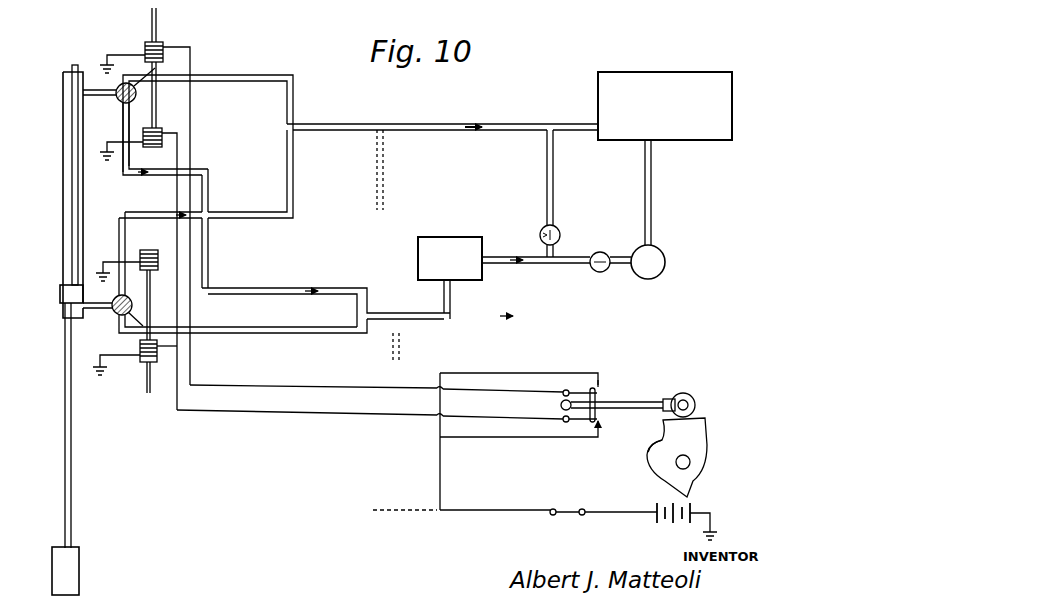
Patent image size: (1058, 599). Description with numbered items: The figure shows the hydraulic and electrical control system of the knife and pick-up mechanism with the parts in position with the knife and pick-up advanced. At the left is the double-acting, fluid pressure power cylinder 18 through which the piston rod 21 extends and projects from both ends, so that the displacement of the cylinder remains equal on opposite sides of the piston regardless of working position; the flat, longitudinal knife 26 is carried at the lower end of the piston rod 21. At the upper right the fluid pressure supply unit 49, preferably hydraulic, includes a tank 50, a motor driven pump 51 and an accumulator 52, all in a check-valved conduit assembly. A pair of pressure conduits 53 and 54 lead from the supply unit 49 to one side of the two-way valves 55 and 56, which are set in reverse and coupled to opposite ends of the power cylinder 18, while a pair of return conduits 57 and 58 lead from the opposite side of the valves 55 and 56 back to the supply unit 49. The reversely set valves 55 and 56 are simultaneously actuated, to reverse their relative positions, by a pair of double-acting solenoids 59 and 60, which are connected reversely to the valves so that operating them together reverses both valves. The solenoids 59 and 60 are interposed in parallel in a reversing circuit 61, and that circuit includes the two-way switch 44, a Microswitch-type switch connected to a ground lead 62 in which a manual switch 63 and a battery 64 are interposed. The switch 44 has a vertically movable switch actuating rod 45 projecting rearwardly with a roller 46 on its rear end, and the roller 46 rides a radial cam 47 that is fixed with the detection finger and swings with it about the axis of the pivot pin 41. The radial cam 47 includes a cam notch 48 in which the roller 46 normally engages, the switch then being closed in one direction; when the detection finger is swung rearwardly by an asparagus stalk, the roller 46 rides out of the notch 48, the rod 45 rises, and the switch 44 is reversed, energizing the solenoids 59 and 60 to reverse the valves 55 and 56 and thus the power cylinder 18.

The power cylinder 18 is at (62, 242).
The piston rod 21 is at (72, 449).
The knife 26 is at (76, 567).
The pivot pin 41 is at (691, 462).
The two-way switch 44 is at (606, 389).
The switch actuating rod 45 is at (629, 400).
The roller 46 is at (690, 394).
The radial cam 47 is at (694, 431).
The cam notch 48 is at (657, 439).
The fluid pressure supply unit 49 is at (530, 285).
The tank 50 is at (652, 86).
The motor driven pump 51 is at (668, 262).
The accumulator 52 is at (444, 238).
The pressure conduit 53 is at (262, 286).
The pressure conduit 54 is at (308, 334).
The two-way valve 55 is at (122, 104).
The two-way valve 56 is at (117, 316).
The return conduit 57 is at (240, 76).
The return conduit 58 is at (233, 212).
The double-acting solenoid 59 is at (154, 128).
The double-acting solenoid 60 is at (150, 344).
The reversing circuit 61 is at (340, 393).
The ground lead 62 is at (483, 510).
The manual switch 63 is at (574, 516).
The battery 64 is at (660, 511).